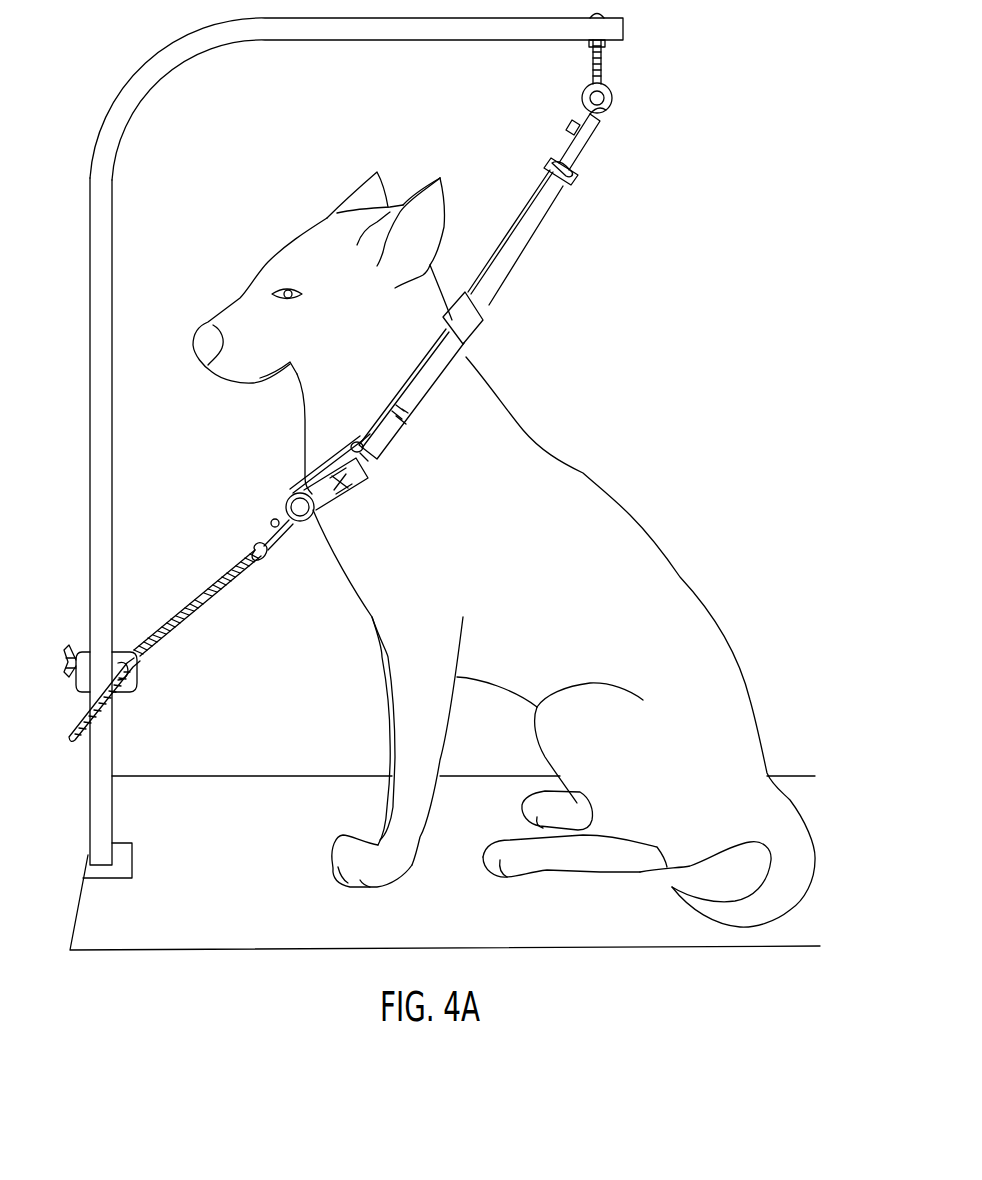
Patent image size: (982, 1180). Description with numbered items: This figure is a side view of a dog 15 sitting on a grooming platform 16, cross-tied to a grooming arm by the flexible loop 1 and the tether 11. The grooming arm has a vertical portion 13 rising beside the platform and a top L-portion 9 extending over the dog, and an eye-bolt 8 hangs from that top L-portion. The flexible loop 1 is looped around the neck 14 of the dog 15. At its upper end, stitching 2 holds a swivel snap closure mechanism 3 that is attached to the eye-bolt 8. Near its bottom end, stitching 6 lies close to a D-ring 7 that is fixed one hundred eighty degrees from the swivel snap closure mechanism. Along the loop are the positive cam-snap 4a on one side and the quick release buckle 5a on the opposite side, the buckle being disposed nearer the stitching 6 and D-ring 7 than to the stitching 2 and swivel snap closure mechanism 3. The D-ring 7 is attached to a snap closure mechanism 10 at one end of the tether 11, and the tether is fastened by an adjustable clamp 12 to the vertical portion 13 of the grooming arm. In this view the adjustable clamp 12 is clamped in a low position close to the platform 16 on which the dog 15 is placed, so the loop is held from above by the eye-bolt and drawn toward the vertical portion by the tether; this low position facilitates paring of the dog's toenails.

The flexible loop 1 is at (433, 373).
The stitching 2 is at (567, 210).
The swivel snap closure mechanism 3 is at (580, 173).
The adjustment sleeve 4a is at (470, 325).
The connector loop 5a is at (347, 450).
The stitching 6 is at (260, 482).
The D-ring 7 is at (317, 512).
The eye-bolt 8 is at (610, 87).
The top L-portion 9 is at (427, 43).
The snap closure mechanism 10 is at (270, 525).
The tether 11 is at (197, 620).
The adjustable clamp 12 is at (128, 678).
The vertical portion 13 is at (112, 210).
The neck 14 is at (297, 390).
The dog 15 is at (583, 473).
The platform 16 is at (250, 797).